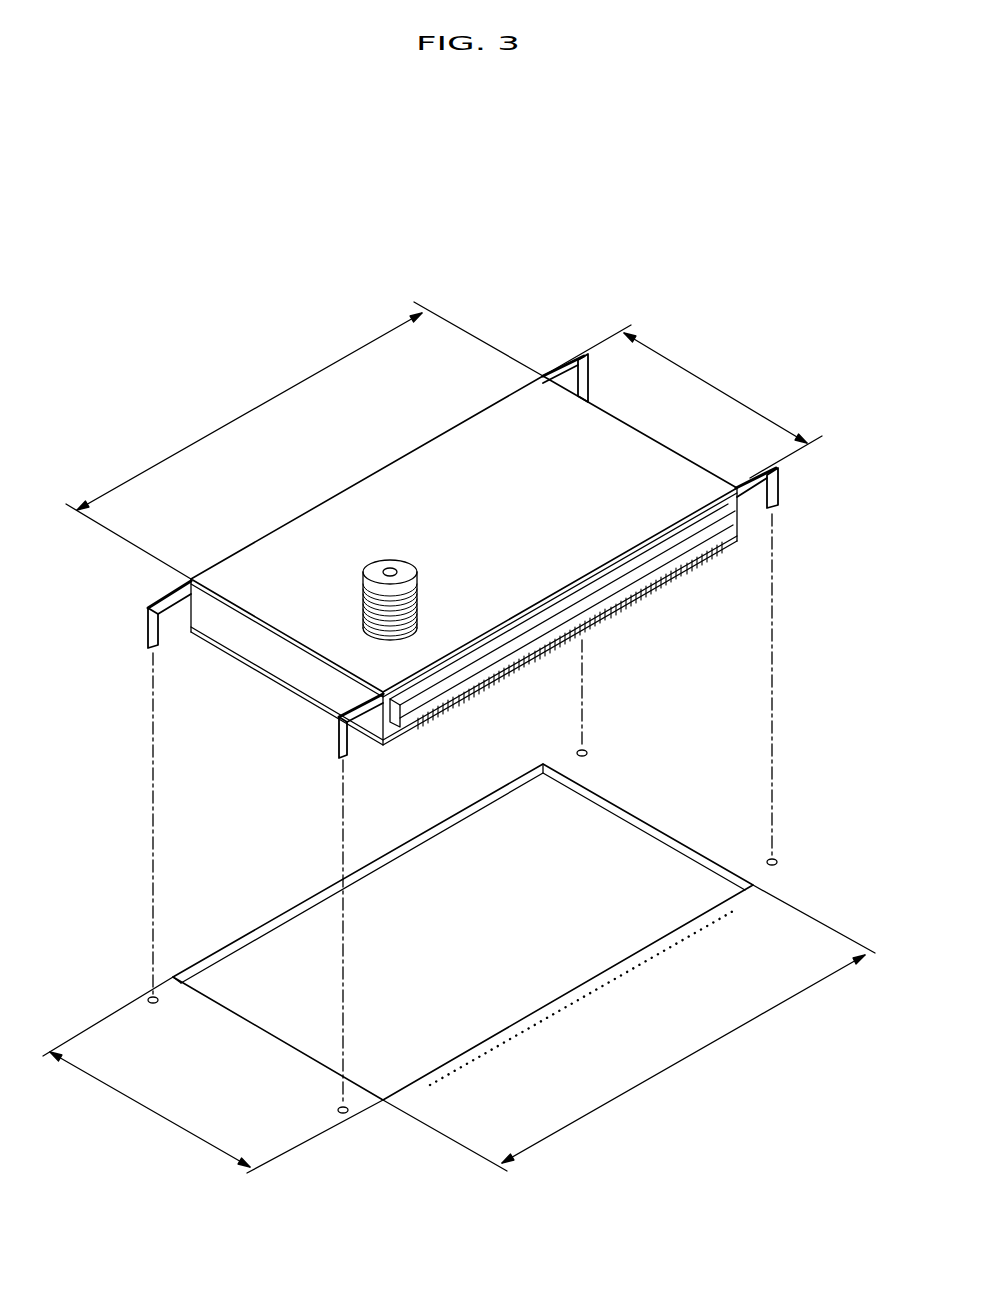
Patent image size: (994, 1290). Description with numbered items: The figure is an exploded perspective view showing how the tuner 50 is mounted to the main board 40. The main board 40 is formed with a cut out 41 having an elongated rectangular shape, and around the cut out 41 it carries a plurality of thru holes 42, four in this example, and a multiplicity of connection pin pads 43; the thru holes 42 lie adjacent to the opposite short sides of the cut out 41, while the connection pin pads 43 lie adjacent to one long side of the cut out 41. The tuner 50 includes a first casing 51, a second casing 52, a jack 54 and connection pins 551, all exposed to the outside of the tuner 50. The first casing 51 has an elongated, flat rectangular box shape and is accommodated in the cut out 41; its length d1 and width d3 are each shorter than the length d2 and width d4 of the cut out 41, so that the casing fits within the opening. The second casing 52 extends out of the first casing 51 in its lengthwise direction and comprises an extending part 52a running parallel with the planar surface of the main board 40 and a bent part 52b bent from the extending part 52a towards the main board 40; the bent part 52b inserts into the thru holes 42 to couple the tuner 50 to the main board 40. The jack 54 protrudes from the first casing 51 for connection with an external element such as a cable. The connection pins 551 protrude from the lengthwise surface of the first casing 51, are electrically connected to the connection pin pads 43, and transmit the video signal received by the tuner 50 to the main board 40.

The tuner 50 is at (487, 496).
The first casing 51 is at (447, 430).
The second casing 52 is at (528, 556).
The extending part 52a is at (771, 512).
The bent part 52b is at (778, 481).
The jack 54 is at (363, 568).
The connection pins 551 is at (620, 612).
The main board 40 is at (459, 961).
The cut out 41 is at (298, 935).
The thru holes 42 is at (785, 863).
The connection pin pads 43 is at (482, 1055).
The length of the first casing d1 is at (304, 440).
The length of the cut out d2 is at (629, 1028).
The width of the first casing d3 is at (682, 401).
The width of the cut out d4 is at (213, 1075).